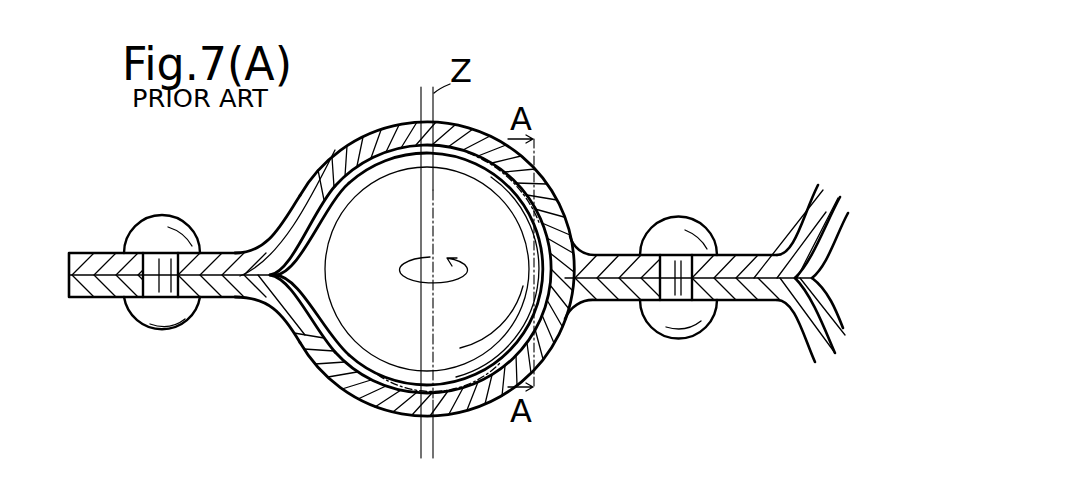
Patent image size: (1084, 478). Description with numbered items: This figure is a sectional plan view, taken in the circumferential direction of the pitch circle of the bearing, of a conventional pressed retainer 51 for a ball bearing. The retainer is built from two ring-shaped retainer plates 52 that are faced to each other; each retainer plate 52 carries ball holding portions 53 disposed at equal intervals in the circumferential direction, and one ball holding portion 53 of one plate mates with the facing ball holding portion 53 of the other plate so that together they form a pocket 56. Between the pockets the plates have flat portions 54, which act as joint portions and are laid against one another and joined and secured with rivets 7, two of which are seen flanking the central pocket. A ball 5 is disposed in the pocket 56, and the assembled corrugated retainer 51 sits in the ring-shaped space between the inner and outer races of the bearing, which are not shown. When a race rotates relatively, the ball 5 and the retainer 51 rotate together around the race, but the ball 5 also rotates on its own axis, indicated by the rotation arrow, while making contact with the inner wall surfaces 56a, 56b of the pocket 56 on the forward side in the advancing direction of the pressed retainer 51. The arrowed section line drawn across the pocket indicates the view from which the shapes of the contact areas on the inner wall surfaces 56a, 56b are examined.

The ball 5 is at (382, 205).
The rivet 7 is at (170, 228).
The pressed retainer 51 is at (484, 126).
The retainer plate 52 is at (274, 213).
The ball holding portion 53 is at (366, 130).
The flat portion 54 is at (604, 254).
The pocket 56 is at (322, 206).
The inner wall surface 56a is at (525, 215).
The inner wall surface 56b is at (523, 315).